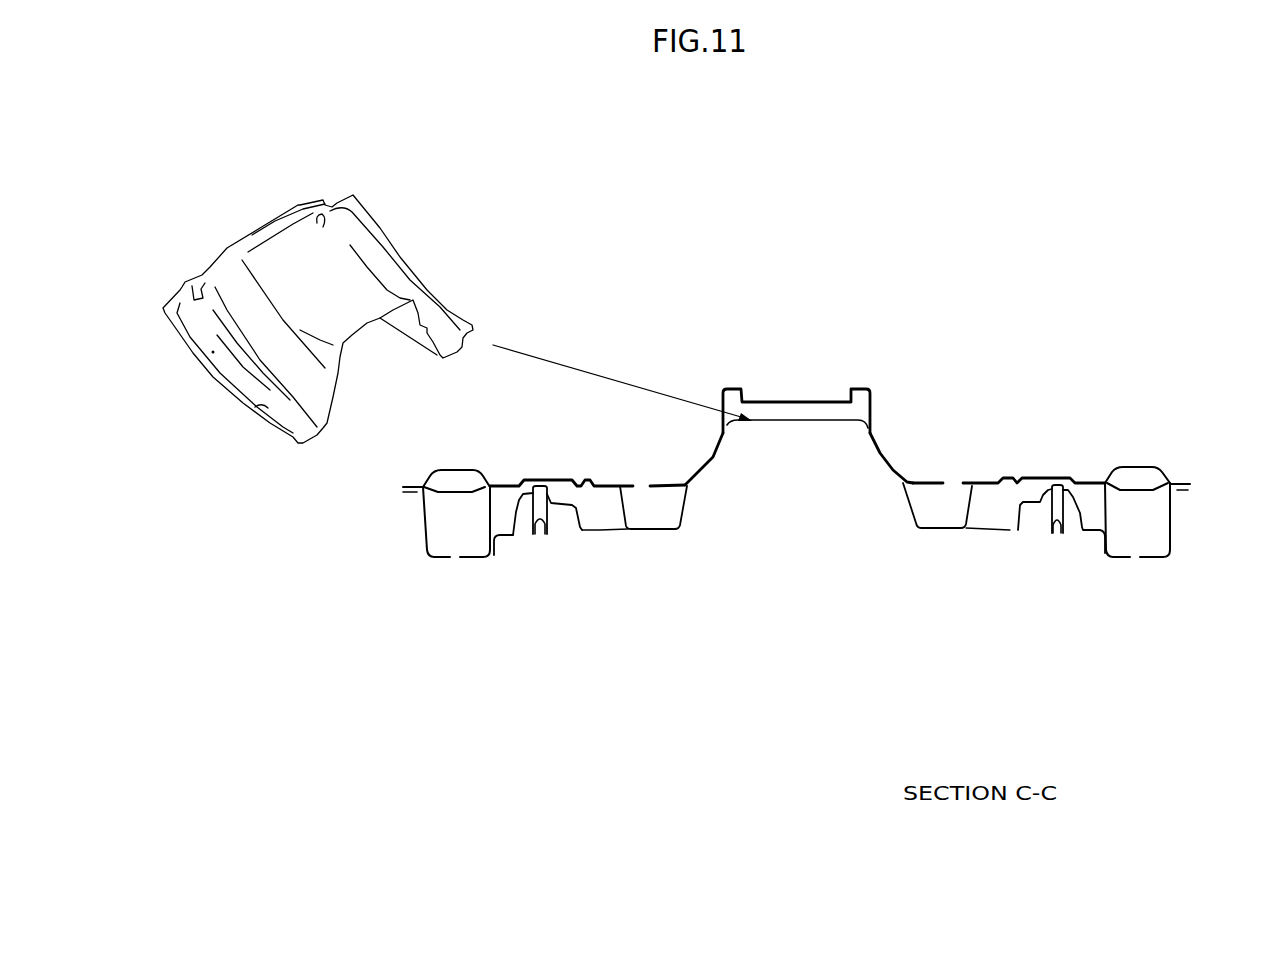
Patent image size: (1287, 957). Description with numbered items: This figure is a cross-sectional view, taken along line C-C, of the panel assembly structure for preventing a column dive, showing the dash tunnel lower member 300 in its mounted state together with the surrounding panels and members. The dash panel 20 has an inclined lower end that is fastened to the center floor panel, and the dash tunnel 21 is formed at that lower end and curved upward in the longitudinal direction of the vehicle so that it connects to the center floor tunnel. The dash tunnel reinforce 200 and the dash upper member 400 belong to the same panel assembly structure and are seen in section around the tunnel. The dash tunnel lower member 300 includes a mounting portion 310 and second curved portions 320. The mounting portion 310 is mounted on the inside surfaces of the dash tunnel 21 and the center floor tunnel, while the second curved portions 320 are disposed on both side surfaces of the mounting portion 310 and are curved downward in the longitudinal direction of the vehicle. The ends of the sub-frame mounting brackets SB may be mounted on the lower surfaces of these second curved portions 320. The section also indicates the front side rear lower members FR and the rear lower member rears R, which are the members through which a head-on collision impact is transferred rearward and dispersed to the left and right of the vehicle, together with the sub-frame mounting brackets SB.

The dash panel 20 is at (597, 485).
The dash tunnel 21 is at (858, 475).
The dash tunnel reinforce 200 is at (865, 390).
The dash tunnel lower member 300 is at (338, 282).
The mounting portion 310 is at (710, 463).
The second curved portions 320 is at (671, 529).
The dash upper member 400 is at (480, 470).
The front side rear lower member FR is at (1103, 553).
The rear lower member rear R is at (407, 492).
The sub-frame mounting bracket SB is at (1043, 533).